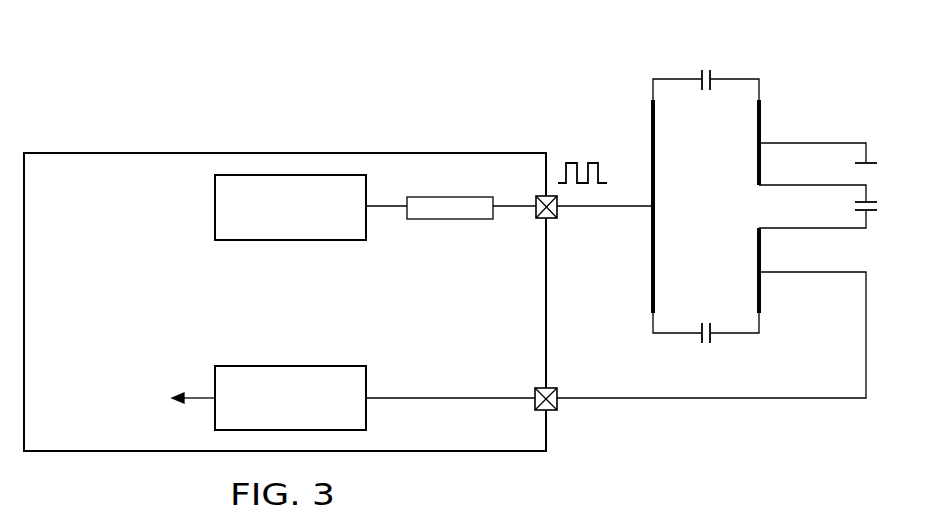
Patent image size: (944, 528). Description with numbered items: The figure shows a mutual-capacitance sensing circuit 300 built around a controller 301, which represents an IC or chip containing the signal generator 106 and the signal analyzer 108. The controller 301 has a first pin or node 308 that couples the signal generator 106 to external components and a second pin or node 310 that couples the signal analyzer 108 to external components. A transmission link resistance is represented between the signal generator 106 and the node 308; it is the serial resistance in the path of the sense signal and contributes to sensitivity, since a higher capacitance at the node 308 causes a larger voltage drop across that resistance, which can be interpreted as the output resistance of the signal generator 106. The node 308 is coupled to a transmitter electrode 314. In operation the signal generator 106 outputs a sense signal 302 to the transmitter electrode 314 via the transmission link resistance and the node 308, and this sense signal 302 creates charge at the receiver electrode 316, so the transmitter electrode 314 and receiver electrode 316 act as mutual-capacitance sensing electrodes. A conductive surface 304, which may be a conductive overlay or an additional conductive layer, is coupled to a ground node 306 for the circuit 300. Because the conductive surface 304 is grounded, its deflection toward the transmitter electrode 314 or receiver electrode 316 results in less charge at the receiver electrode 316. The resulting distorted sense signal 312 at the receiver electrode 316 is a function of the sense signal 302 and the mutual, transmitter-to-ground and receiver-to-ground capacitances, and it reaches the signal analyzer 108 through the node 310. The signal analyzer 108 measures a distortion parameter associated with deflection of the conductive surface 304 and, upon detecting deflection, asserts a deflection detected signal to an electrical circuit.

The mutual-capacitance sensing circuit 300 is at (166, 58).
The controller 301 is at (121, 153).
The signal generator 106 is at (215, 194).
The signal analyzer 108 is at (290, 366).
The sense signal 302 is at (592, 160).
The conductive surface 304 is at (760, 122).
The ground node 306 is at (868, 160).
The first pin or node 308 is at (560, 217).
The second pin or node 310 is at (560, 411).
The distorted sense signal 312 is at (710, 400).
The transmitter electrode 314 is at (655, 153).
The receiver electrode 316 is at (760, 292).